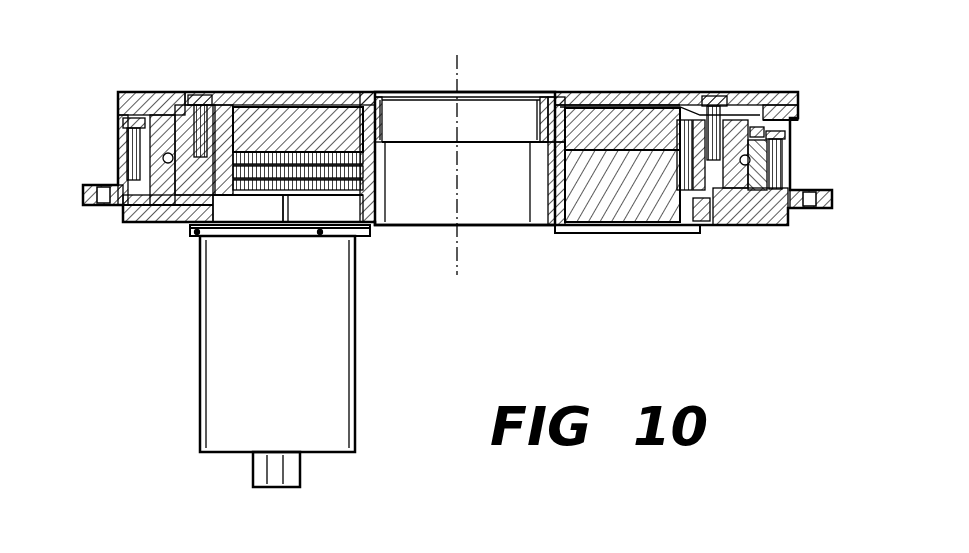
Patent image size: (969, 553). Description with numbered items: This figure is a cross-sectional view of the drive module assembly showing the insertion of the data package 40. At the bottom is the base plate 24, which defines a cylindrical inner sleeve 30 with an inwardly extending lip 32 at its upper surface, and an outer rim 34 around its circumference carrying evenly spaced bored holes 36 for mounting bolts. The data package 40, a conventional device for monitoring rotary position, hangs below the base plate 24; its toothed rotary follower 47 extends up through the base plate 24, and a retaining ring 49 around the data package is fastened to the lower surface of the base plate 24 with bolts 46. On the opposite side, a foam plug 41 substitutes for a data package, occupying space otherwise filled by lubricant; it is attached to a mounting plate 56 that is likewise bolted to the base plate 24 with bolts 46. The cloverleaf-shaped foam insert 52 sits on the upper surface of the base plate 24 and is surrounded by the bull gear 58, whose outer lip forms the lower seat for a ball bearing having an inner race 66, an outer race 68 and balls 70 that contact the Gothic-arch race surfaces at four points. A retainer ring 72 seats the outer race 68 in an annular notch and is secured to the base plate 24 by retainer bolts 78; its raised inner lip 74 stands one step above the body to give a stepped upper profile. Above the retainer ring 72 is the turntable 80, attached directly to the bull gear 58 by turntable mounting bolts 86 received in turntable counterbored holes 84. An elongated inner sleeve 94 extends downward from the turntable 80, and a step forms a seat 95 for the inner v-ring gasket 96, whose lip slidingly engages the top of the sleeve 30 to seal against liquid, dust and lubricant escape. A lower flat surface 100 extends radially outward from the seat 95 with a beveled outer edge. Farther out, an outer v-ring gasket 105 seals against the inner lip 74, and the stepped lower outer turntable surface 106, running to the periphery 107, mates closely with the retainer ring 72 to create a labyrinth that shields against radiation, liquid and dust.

The base plate 24 is at (748, 225).
The cylindrical inner sleeve 30 is at (542, 200).
The inwardly extending lip 32 is at (537, 152).
The outer rim 34 is at (834, 195).
The bored holes 36 is at (815, 208).
The data package 40 is at (308, 361).
The plug 41 is at (622, 210).
The bolts 46 is at (195, 235).
The toothed rotary follower 47 is at (325, 225).
The retaining ring 49 is at (255, 225).
The insert 52 is at (292, 92).
The mounting plate 56 is at (650, 238).
The bull gear 58 is at (693, 235).
The inner race 66 is at (190, 92).
The outer race 68 is at (158, 75).
The balls 70 is at (165, 222).
The retainer ring 72 is at (796, 68).
The raised inner lip 74 is at (743, 68).
The retainer bolts 78 is at (790, 133).
The turntable 80 is at (672, 68).
The turntable counterbored holes 84 is at (212, 92).
The turntable mounting bolts 86 is at (200, 92).
The elongated inner sleeve 94 is at (537, 125).
The seat 95 is at (383, 122).
The inner v-ring gasket 96 is at (585, 62).
The lower flat surface 100 is at (605, 92).
The outer v-ring gasket 105 is at (745, 92).
The lower outer turntable surface 106 is at (118, 115).
The periphery 107 is at (845, 115).